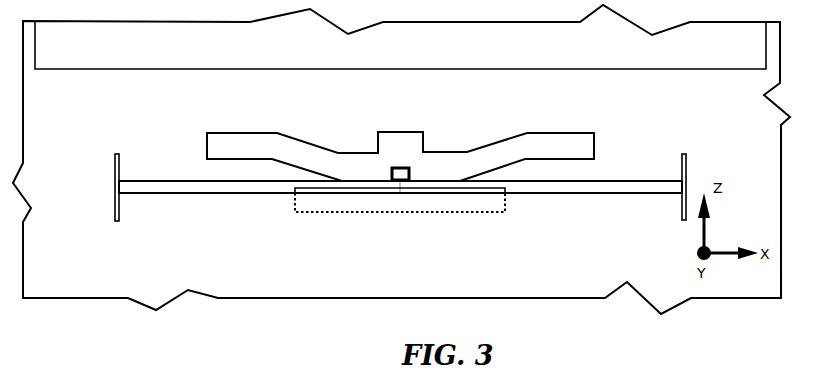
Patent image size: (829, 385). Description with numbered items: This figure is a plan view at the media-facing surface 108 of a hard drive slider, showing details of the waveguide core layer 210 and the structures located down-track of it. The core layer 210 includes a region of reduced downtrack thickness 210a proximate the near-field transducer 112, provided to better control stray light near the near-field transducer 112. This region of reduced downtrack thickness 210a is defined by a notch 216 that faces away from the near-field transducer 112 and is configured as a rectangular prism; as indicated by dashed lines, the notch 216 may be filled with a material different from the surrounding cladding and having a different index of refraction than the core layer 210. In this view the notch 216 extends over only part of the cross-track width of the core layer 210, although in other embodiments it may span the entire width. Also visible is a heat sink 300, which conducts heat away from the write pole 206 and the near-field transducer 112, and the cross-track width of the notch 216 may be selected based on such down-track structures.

The media-facing surface 108 is at (567, 282).
The heat sink 300 is at (474, 157).
The core layer 210 is at (640, 195).
The region of reduced downtrack thickness 210a is at (468, 188).
The notch 216 is at (377, 194).
The write pole 206 is at (400, 166).
The near-field transducer 112 is at (400, 181).